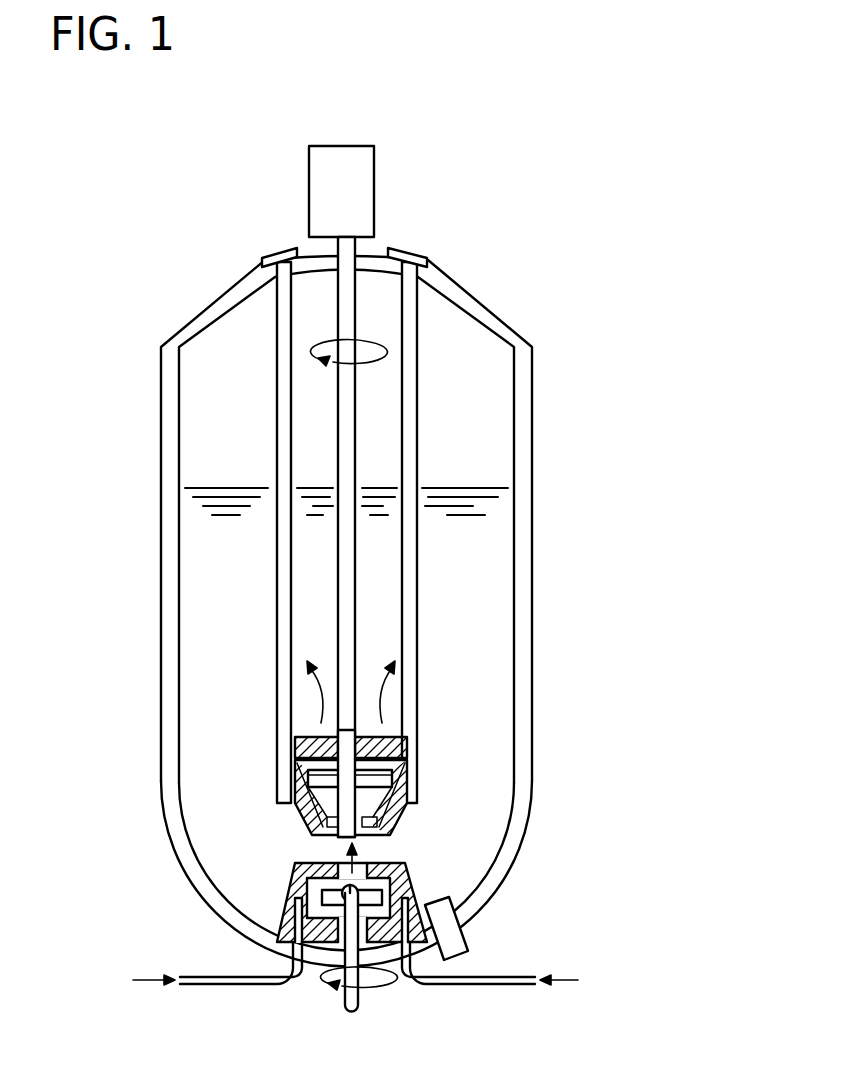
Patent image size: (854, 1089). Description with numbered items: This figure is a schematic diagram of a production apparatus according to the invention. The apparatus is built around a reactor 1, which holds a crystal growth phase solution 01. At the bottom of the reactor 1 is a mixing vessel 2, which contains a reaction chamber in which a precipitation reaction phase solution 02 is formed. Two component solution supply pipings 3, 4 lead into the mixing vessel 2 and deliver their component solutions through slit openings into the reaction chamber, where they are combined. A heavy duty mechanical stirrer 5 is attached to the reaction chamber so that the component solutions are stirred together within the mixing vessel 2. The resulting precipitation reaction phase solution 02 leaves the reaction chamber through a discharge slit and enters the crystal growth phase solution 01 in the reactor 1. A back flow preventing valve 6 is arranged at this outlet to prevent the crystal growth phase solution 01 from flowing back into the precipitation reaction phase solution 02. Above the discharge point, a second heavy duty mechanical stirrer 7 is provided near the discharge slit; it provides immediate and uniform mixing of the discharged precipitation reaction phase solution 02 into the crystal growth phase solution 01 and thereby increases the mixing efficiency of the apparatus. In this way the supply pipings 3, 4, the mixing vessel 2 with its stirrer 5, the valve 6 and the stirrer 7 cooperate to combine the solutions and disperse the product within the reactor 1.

The reactor 1 is at (162, 703).
The crystal growth phase solution 01 is at (203, 602).
The mixing vessel 2 is at (292, 877).
The component solution supply piping 3 is at (203, 987).
The component solution supply piping 4 is at (505, 985).
The heavy duty mechanical stirrer 5 is at (340, 1005).
The back flow preventing valve 6 is at (372, 870).
The heavy duty mechanical stirrer 7 is at (419, 776).
The precipitation reaction phase solution 02 is at (383, 910).